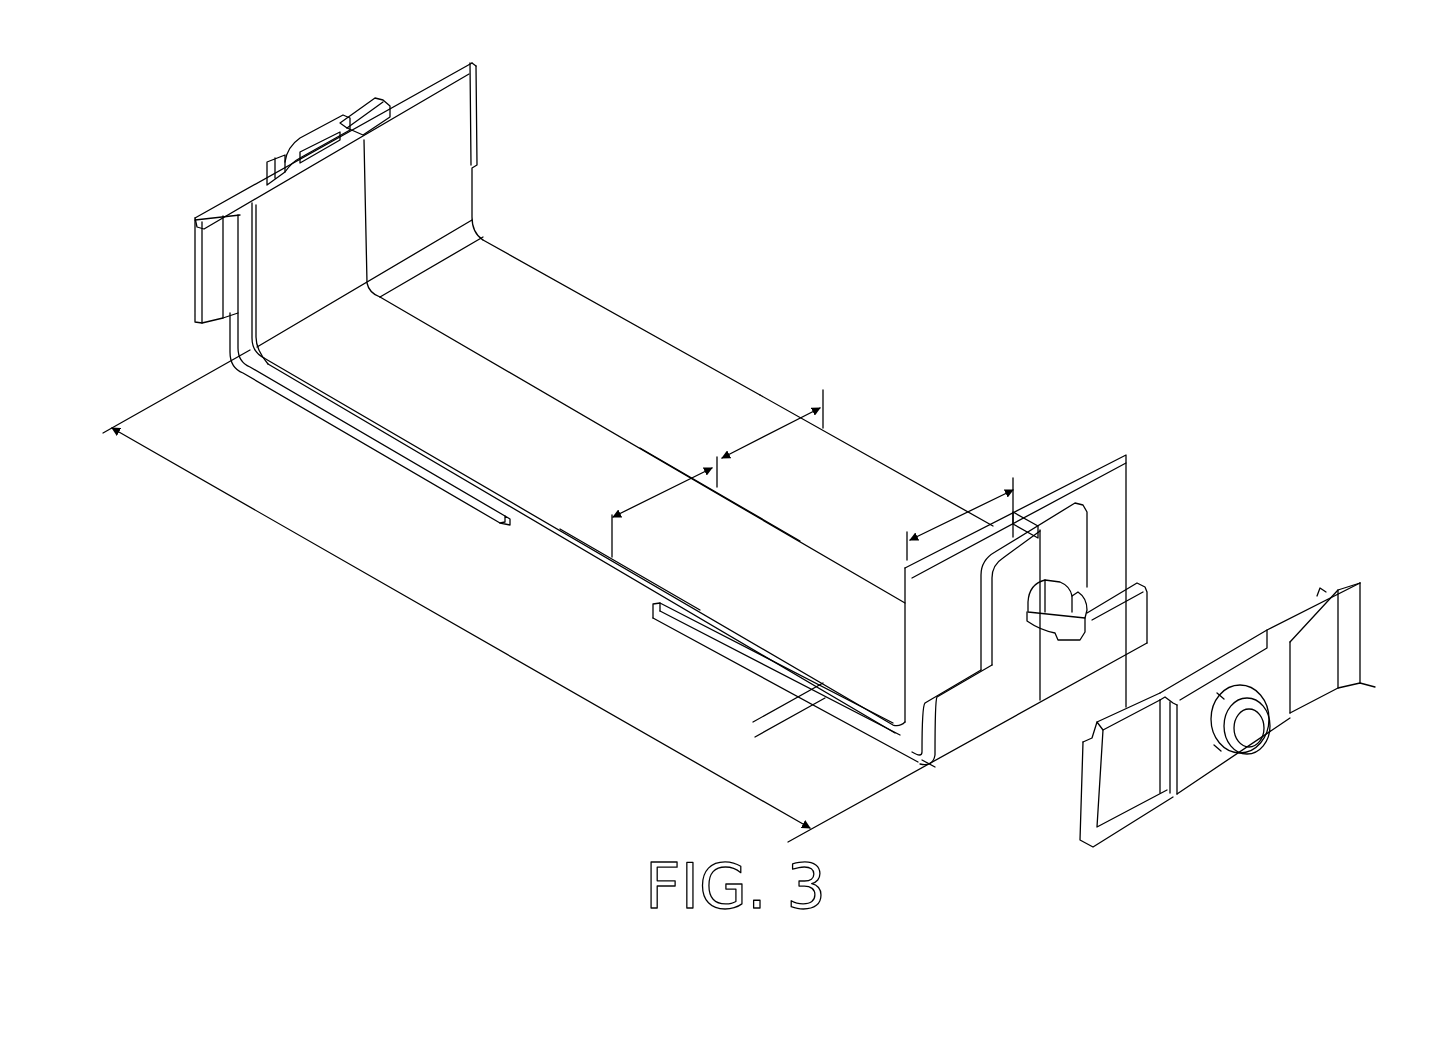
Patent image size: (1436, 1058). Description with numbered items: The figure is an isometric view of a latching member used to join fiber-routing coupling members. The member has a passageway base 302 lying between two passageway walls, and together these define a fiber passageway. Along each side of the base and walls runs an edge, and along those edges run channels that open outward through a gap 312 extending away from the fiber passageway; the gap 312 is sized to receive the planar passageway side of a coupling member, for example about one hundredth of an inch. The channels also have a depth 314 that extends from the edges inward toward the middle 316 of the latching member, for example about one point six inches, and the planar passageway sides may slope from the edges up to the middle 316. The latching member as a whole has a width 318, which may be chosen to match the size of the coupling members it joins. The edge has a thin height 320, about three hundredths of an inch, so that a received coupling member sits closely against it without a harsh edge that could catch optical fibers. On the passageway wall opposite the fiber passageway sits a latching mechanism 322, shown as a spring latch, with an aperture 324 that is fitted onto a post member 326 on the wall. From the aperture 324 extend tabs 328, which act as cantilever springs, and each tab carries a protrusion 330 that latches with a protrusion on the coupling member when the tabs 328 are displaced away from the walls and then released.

The passageway base 302 is at (572, 508).
The gap 312 is at (658, 620).
The depth 314 is at (935, 503).
The middle 316 is at (728, 497).
The width 318 is at (500, 650).
The thin height 320 is at (763, 682).
The latching mechanism 322 is at (197, 267).
The aperture 324 is at (1250, 734).
The post member 326 is at (1075, 650).
The tabs 328 is at (1327, 730).
The protrusion 330 is at (1320, 589).